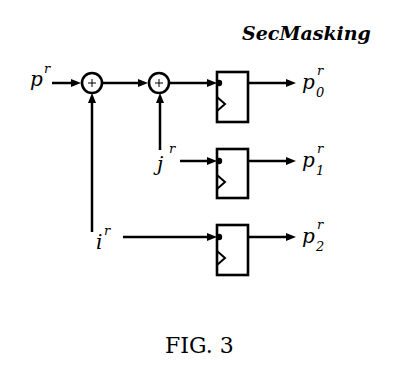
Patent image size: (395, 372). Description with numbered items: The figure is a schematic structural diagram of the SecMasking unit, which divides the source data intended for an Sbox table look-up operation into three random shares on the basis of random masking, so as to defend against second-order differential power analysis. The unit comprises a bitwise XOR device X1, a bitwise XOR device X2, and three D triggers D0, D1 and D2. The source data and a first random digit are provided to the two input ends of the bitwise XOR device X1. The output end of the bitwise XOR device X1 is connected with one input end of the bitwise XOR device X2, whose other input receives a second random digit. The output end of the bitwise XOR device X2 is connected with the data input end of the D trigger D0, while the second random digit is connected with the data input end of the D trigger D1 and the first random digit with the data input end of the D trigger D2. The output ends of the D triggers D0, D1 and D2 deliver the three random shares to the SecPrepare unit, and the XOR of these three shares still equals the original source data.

The bitwise XOR device X1 is at (93, 71).
The bitwise XOR device X2 is at (160, 71).
The D trigger D0 is at (232, 86).
The D trigger D1 is at (232, 163).
The D trigger D2 is at (232, 239).